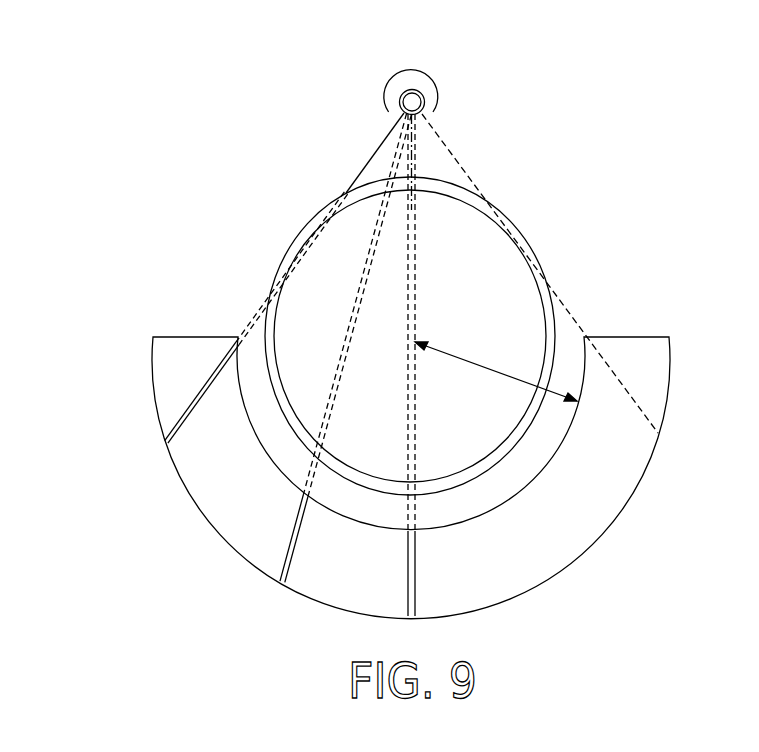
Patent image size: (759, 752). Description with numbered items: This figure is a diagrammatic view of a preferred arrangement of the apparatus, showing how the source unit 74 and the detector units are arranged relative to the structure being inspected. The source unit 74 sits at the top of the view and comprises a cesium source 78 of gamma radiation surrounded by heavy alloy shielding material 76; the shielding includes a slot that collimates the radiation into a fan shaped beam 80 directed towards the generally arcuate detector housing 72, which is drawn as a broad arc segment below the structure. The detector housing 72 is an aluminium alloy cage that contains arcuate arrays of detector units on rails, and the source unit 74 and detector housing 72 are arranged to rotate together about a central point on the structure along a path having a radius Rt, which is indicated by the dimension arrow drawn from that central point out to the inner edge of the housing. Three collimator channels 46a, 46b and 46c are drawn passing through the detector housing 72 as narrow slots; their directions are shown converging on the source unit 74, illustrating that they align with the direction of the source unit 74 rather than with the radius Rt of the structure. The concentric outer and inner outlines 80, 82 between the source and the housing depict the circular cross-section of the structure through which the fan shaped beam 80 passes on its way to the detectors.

The detector housing 72 is at (656, 386).
The source unit 74 is at (400, 86).
The heavy alloy shielding material 76 is at (442, 106).
The cesium source 78 is at (430, 79).
The fan shaped beam 80 is at (473, 181).
The tube inner surface 82 is at (530, 237).
The collimator channel 46a is at (219, 360).
The collimator channel 46b is at (290, 533).
The collimator channel 46c is at (417, 583).
The radius of the structure Rt is at (496, 371).